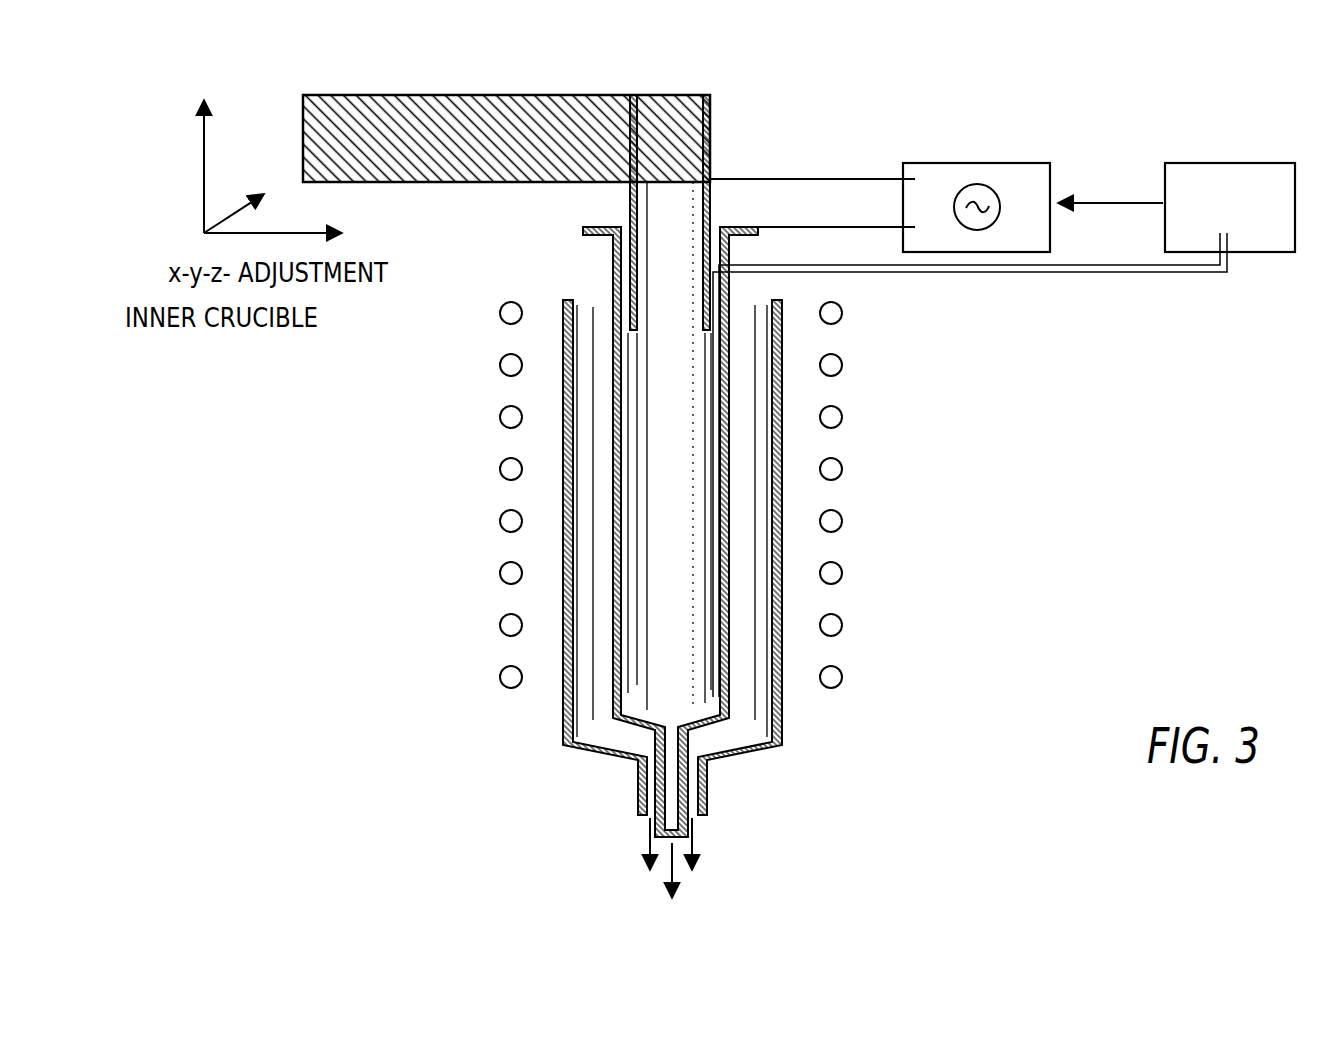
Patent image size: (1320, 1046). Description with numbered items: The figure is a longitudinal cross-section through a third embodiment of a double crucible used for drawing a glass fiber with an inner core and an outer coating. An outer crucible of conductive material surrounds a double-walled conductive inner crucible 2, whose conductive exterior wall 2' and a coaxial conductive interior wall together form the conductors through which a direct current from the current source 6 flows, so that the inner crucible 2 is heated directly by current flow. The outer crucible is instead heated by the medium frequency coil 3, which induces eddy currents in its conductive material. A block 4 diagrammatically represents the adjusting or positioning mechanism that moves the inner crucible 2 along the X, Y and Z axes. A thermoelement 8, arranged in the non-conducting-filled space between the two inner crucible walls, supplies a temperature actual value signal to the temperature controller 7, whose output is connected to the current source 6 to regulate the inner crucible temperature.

The inner crucible 2 is at (641, 517).
The conductive exterior wall 2' is at (523, 476).
The medium frequency coil 3 is at (833, 480).
The block 4 is at (503, 125).
The current source 6 is at (970, 172).
The temperature controller 7 is at (1233, 178).
The thermoelement 8 is at (1053, 273).